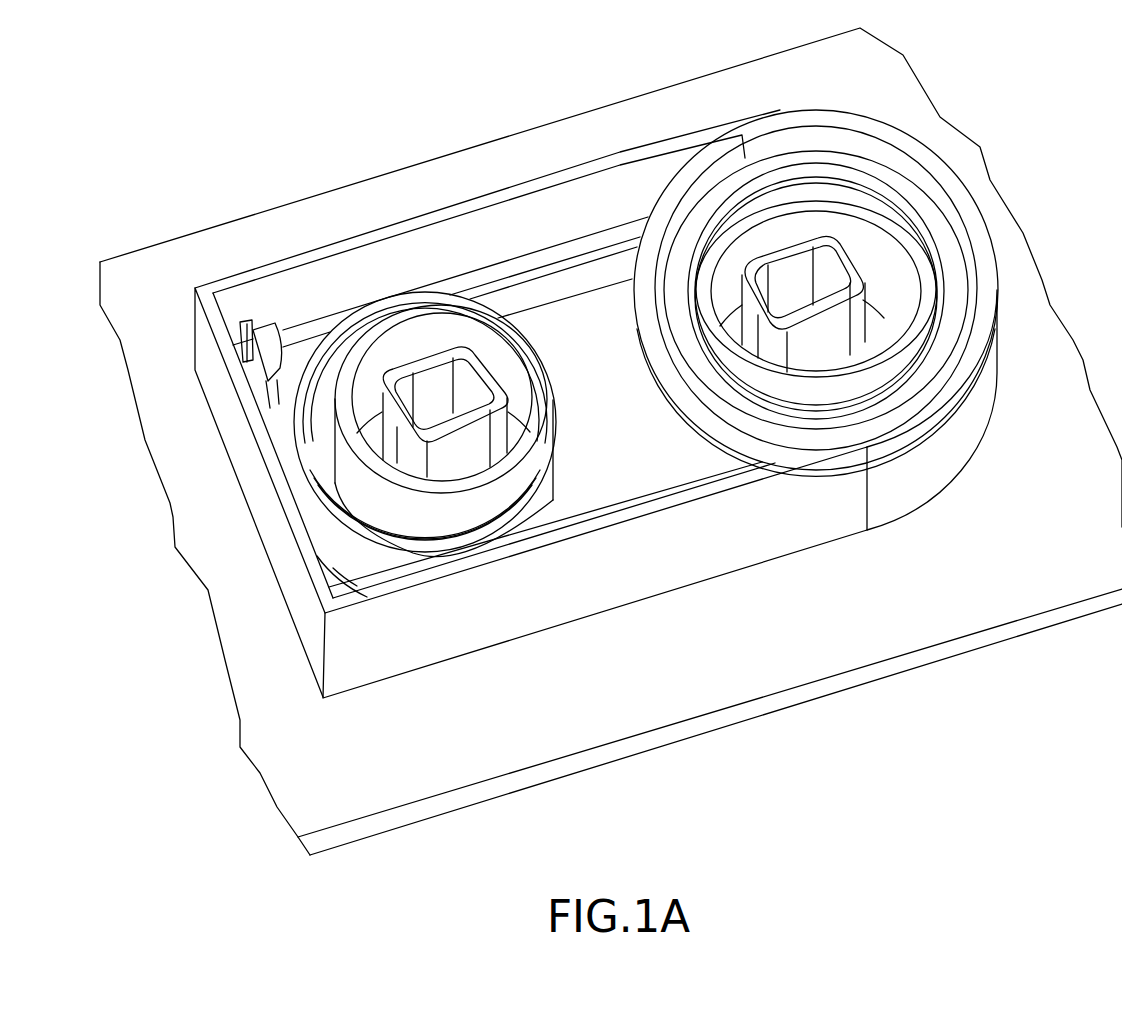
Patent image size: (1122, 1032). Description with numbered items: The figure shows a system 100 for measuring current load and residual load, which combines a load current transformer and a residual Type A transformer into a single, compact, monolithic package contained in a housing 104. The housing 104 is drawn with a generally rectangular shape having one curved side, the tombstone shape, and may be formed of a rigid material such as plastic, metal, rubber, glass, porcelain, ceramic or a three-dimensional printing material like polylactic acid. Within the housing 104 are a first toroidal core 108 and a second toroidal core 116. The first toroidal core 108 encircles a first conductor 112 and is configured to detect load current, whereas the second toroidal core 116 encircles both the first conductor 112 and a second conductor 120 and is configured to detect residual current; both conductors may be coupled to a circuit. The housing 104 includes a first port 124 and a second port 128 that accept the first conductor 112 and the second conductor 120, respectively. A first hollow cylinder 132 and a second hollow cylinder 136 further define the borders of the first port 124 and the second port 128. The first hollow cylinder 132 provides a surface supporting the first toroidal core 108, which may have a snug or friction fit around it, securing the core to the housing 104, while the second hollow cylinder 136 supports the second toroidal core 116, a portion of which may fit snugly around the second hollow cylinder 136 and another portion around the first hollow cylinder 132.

The system 100 is at (155, 107).
The housing 104 is at (542, 213).
The first toroidal core 108 is at (727, 187).
The first conductor 112 is at (793, 263).
The second toroidal core 116 is at (510, 293).
The second conductor 120 is at (433, 377).
The first port 124 is at (873, 323).
The second port 128 is at (373, 437).
The first hollow cylinder 132 is at (902, 303).
The second hollow cylinder 136 is at (372, 462).